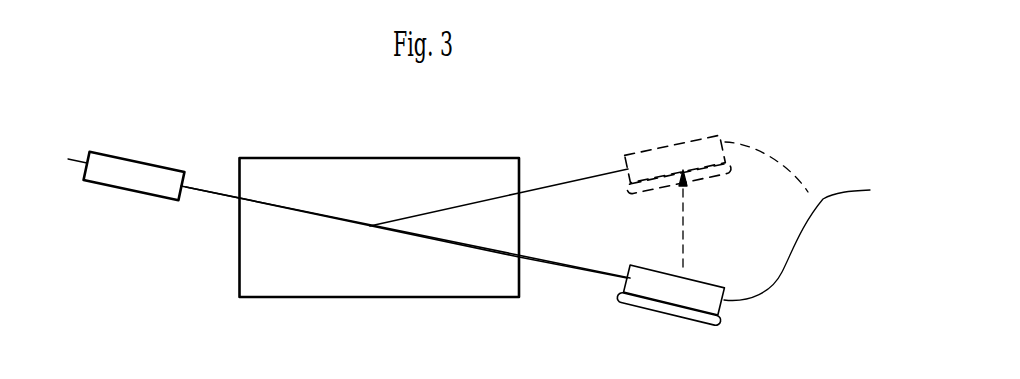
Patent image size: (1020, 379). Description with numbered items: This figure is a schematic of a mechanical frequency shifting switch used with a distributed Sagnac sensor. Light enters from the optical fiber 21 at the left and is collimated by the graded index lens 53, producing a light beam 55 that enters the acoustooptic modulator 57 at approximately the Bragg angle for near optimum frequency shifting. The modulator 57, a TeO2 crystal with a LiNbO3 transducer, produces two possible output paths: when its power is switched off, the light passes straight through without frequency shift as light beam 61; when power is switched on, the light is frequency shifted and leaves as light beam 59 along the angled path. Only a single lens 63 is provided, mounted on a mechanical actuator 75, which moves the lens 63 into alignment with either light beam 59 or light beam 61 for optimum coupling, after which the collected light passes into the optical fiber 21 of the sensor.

The optical fiber 21 is at (72, 160).
The graded index lens 53 is at (138, 191).
The light beam 55 is at (217, 197).
The acoustooptic modulator 57 is at (304, 300).
The frequency shifted light beam 59 is at (543, 189).
The light beam 61 is at (545, 262).
The lens 63 is at (702, 280).
The mechanical actuator 75 is at (700, 327).